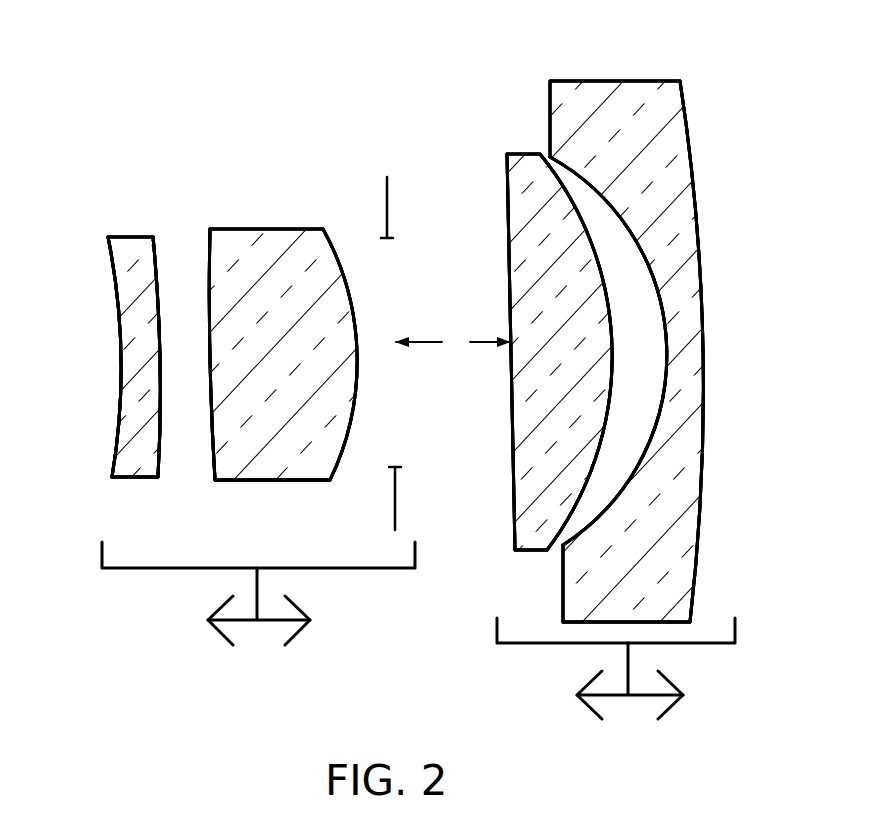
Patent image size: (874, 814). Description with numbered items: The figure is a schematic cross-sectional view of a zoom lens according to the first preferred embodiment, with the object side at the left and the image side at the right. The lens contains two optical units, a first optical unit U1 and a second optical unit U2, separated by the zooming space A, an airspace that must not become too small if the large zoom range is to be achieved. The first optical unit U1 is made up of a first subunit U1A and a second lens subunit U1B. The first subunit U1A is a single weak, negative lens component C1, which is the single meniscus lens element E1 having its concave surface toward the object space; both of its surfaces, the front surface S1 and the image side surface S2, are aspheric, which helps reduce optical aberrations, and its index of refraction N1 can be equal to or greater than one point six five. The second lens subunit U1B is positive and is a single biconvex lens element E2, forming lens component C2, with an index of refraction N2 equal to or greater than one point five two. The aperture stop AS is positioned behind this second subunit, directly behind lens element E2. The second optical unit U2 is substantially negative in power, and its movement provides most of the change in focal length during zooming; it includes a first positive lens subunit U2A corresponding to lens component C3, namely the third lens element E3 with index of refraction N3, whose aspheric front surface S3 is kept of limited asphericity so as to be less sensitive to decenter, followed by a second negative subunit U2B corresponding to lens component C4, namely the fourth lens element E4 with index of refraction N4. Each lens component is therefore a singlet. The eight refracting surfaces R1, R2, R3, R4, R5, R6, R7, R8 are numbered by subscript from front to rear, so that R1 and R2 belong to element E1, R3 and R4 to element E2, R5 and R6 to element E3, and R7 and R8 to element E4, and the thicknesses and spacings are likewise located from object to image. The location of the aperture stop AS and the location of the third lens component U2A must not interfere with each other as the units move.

The surface R1 is at (102, 243).
The surface R2 is at (158, 243).
The surface R3 is at (206, 246).
The surface R4 is at (334, 236).
The surface R5 is at (500, 178).
The surface R6 is at (569, 175).
The surface R7 is at (599, 177).
The surface R8 is at (688, 121).
The first lens element E1 is at (125, 286).
The second lens element E2 is at (212, 388).
The third lens element E3 is at (512, 262).
The fourth lens element E4 is at (690, 243).
The index of refraction of the first lens element N1 is at (130, 349).
The index of refraction of the second lens element N2 is at (300, 393).
The index of refraction N3 is at (557, 405).
The index of refraction N4 is at (693, 402).
The front surface of the first lens element S1 is at (120, 410).
The image side surface of the first lens element S2 is at (157, 452).
The front surface of the third lens element S3 is at (208, 313).
The lens component C1 is at (128, 478).
The lens component C2 is at (307, 466).
The lens component C3 is at (520, 482).
The lens component C4 is at (700, 515).
The first subunit U1A is at (115, 453).
The second lens subunit U1B is at (232, 468).
The third lens component U2A is at (537, 548).
The second negative subunit U2B is at (685, 572).
The first optical unit U1 is at (258, 613).
The second optical unit U2 is at (616, 688).
The aperture stop AS is at (393, 197).
The zooming space A is at (453, 339).